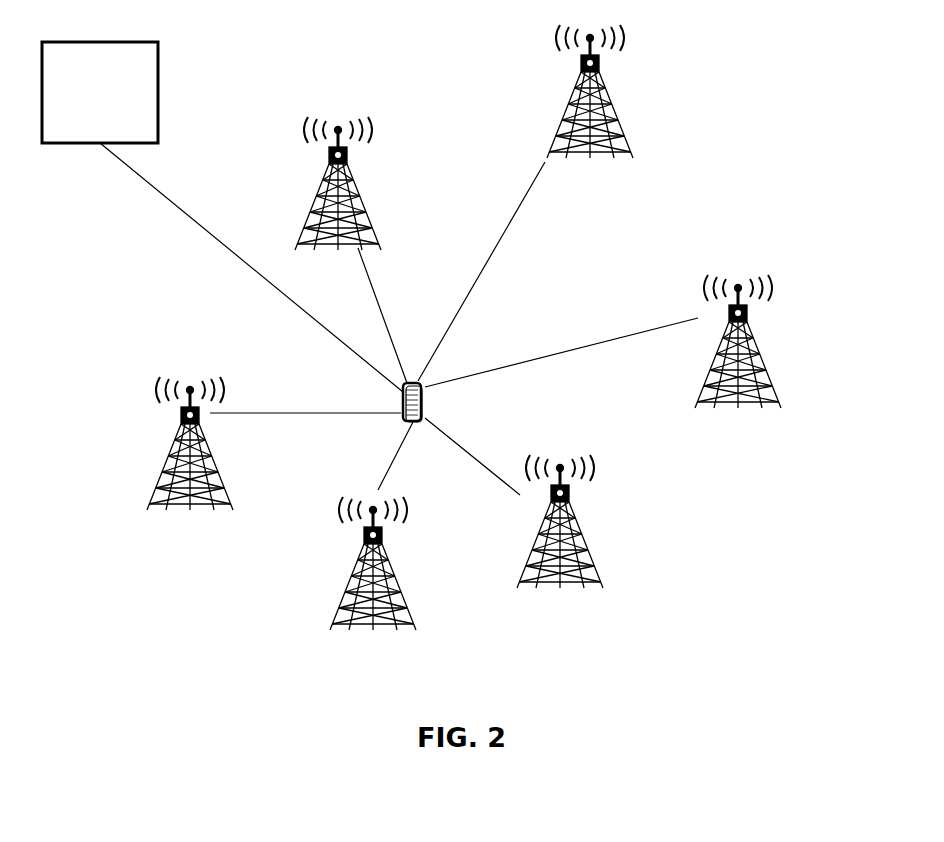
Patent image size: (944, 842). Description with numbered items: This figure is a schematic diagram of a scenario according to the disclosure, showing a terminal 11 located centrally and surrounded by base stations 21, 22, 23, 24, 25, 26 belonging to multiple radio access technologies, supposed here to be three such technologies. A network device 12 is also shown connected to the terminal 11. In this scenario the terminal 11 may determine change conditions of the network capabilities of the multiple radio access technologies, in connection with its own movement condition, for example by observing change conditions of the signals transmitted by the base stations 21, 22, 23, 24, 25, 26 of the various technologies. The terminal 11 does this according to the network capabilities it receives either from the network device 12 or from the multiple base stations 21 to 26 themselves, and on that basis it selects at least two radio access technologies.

The terminal 11 is at (430, 405).
The network device 12 is at (160, 80).
The base station 21 is at (370, 157).
The base station 22 is at (625, 93).
The base station 23 is at (772, 330).
The base station 24 is at (595, 515).
The base station 25 is at (394, 553).
The base station 26 is at (222, 447).